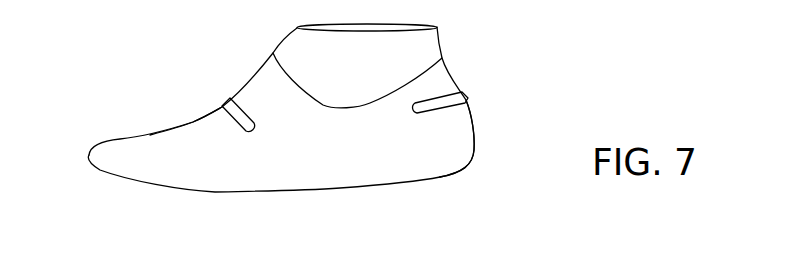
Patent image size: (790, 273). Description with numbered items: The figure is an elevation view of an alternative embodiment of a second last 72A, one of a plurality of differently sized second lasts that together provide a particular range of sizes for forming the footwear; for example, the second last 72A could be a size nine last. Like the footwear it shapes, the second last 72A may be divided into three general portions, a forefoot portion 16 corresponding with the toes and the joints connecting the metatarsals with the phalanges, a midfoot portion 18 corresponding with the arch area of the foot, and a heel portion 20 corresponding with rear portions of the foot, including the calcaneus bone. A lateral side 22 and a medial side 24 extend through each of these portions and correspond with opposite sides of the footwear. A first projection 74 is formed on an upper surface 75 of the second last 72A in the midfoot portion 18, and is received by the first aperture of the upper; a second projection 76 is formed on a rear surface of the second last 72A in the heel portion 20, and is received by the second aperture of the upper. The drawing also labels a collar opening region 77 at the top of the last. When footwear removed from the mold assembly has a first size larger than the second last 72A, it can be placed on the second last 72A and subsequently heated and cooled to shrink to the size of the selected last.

The forefoot portion 16 is at (150, 170).
The midfoot portion 18 is at (313, 170).
The heel portion 20 is at (455, 147).
The lateral side 22 is at (148, 133).
The medial side 24 is at (385, 142).
The second last 72A is at (452, 155).
The first projection 74 is at (230, 107).
The upper surface 75 is at (197, 118).
The second projection 76 is at (462, 97).
The collar 77 is at (443, 62).